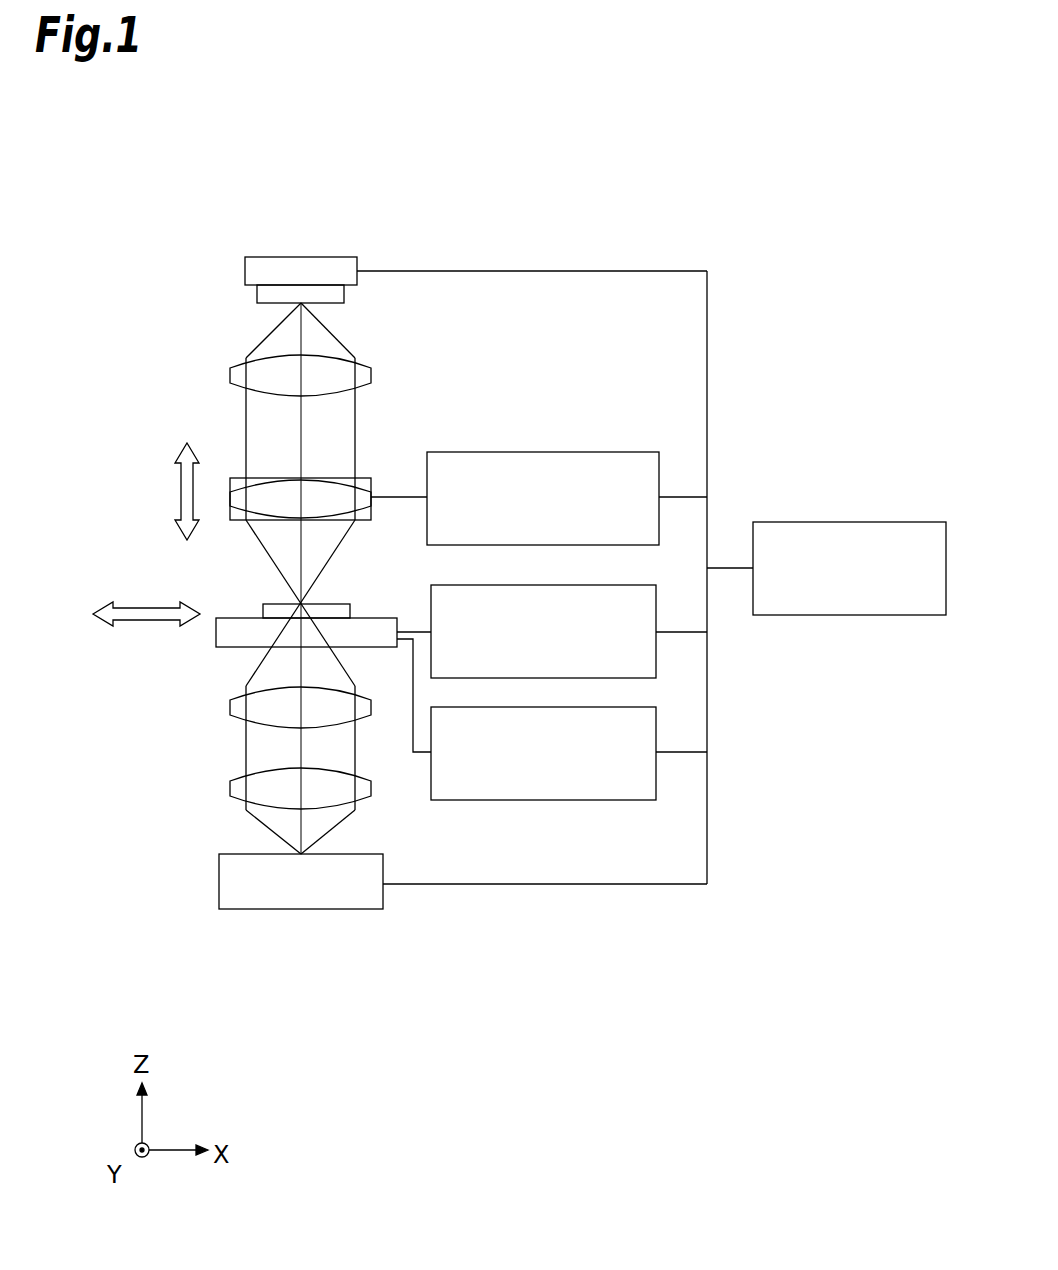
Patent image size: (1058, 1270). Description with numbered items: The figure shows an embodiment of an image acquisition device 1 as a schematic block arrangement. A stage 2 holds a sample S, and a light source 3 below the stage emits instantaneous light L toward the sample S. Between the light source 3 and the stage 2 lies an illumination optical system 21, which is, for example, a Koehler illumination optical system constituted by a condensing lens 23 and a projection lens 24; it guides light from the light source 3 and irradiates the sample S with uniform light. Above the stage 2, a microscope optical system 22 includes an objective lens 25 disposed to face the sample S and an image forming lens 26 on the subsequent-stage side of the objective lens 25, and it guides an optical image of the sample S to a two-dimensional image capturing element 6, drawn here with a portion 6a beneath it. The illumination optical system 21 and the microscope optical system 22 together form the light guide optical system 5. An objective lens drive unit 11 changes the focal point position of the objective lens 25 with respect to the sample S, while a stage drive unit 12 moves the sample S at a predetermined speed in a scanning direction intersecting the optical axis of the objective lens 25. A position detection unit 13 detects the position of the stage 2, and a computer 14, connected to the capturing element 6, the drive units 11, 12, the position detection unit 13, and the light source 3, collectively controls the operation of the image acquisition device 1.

The image acquisition device 1 is at (188, 220).
The stage 2 is at (216, 633).
The light source 3 is at (219, 881).
The light guide optical system 5 is at (207, 577).
The two-dimensional image capturing element 6 is at (272, 257).
The imaging element 6a is at (264, 303).
The objective lens drive unit 11 is at (612, 452).
The stage drive unit 12 is at (607, 585).
The position detection unit 13 is at (607, 707).
The computer 14 is at (903, 522).
The illumination optical system 21 is at (128, 713).
The microscope optical system 22 is at (128, 345).
The condensing lens 23 is at (230, 788).
The projection lens 24 is at (230, 707).
The objective lens 25 is at (230, 478).
The image forming lens 26 is at (230, 375).
The sample S is at (266, 604).
The instantaneous light L is at (275, 828).